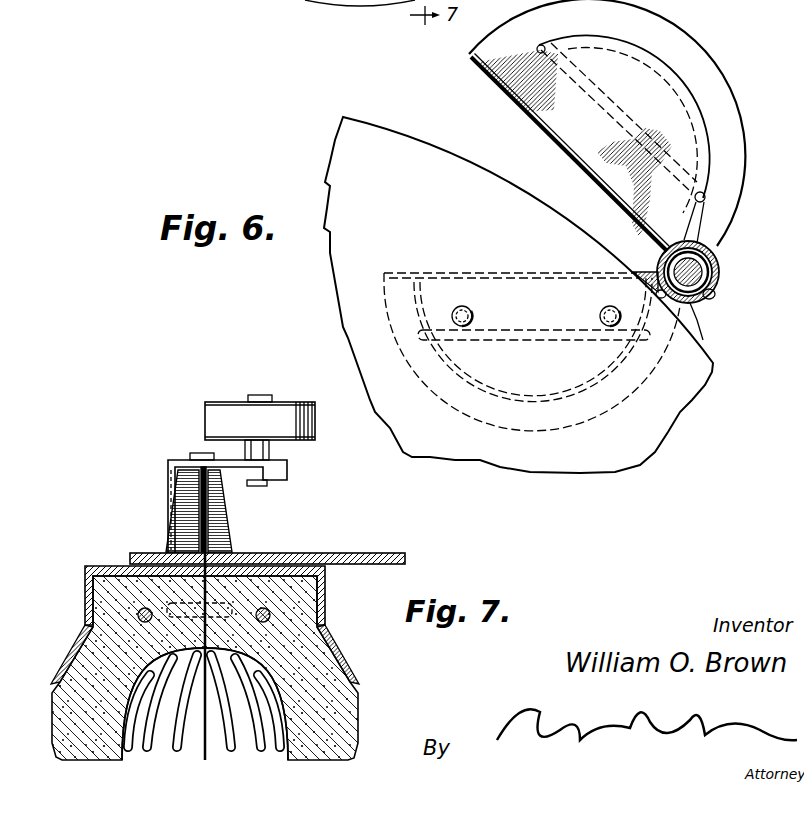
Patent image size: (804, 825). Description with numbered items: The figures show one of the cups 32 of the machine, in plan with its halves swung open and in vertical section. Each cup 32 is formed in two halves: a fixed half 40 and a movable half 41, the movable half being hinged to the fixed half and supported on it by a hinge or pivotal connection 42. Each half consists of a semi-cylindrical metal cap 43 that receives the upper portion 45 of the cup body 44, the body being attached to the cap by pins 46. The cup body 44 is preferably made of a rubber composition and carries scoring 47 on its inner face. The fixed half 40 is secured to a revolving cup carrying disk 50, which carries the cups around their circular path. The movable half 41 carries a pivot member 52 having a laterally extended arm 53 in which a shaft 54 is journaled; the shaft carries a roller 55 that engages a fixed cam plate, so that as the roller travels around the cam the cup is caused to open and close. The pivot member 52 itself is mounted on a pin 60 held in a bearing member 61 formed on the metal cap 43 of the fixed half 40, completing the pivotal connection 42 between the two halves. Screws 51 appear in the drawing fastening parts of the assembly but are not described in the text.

In FIG. 6, the cup 32 is at (614, 125).
In FIG. 7, the cup 32 is at (208, 559).
In FIG. 6, the fixed half 40 is at (526, 268).
In FIG. 7, the fixed half 40 is at (215, 625).
In FIG. 6, the movable half 41 is at (699, 60).
In FIG. 7, the movable half 41 is at (80, 607).
In FIG. 6, the hinge or pivotal connection 42 is at (707, 273).
In FIG. 7, the hinge or pivotal connection 42 is at (189, 446).
In FIG. 6, the metal cap 43 is at (700, 133).
In FIG. 7, the metal cap 43 is at (93, 567).
In FIG. 7, the cup body 44 is at (92, 735).
In FIG. 7, the upper portion of the cup body 45 is at (306, 553).
In FIG. 6, the pins 46 is at (545, 45).
In FIG. 7, the pins 46 is at (237, 600).
In FIG. 7, the scoring 47 is at (221, 717).
In FIG. 7, the cup carrying disk 50 is at (386, 553).
In FIG. 6, the screw 51 is at (470, 311).
In FIG. 7, the screw 51 is at (150, 611).
In FIG. 6, the pivot member 52 is at (700, 252).
In FIG. 7, the pivot member 52 is at (168, 483).
In FIG. 7, the laterally extended arm 53 is at (229, 466).
In FIG. 7, the shaft 54 is at (267, 484).
In FIG. 7, the roller 55 is at (294, 403).
In FIG. 6, the pin 60 is at (716, 265).
In FIG. 7, the pin 60 is at (197, 452).
In FIG. 6, the bearing member 61 is at (711, 288).
In FIG. 7, the bearing member 61 is at (218, 500).